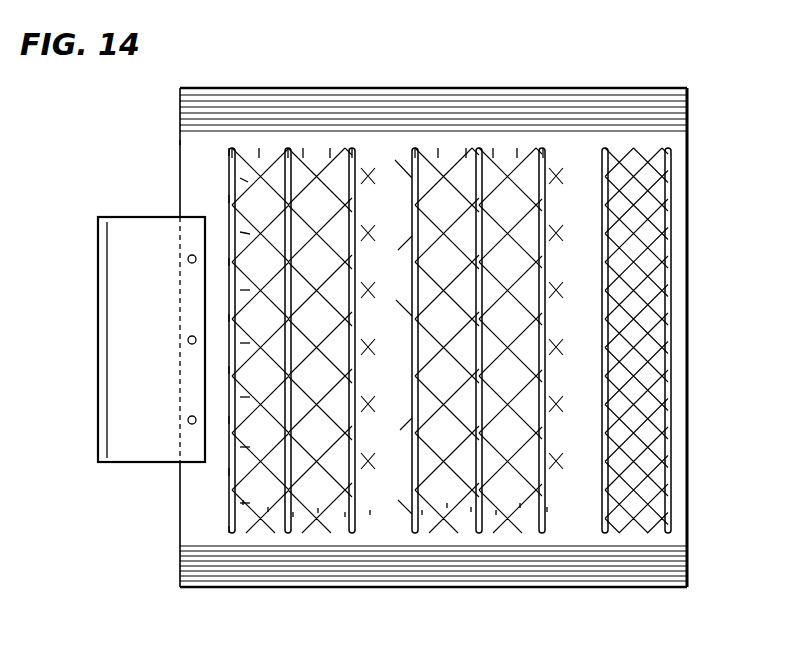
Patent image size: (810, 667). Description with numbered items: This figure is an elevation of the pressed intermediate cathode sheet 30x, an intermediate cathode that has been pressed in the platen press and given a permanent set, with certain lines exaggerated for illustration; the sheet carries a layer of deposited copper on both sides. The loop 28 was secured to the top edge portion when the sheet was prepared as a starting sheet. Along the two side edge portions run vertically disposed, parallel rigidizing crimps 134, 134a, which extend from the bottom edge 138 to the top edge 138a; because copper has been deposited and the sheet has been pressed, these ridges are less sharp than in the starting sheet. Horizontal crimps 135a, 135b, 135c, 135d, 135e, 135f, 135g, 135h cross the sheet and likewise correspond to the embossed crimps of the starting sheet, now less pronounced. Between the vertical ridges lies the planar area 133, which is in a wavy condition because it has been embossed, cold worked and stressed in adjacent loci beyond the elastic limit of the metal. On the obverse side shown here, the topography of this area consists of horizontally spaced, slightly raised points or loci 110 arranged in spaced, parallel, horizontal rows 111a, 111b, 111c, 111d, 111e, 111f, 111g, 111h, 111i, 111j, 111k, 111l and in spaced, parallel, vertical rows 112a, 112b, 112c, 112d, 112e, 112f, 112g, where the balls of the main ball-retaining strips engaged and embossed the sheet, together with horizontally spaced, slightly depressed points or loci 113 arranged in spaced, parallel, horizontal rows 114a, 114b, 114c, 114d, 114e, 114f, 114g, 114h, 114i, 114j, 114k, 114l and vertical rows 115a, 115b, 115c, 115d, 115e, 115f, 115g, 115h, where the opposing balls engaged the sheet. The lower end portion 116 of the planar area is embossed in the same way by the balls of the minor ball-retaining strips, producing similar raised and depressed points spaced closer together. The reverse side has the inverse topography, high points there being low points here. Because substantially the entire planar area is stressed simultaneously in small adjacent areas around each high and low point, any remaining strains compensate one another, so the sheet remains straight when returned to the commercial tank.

The loop 28 is at (110, 432).
The pressed intermediate cathode sheet 30x is at (692, 122).
The raised points or loci 110 is at (418, 350).
The horizontal row of raised points 111a is at (243, 500).
The horizontal row of raised points 111b is at (268, 507).
The horizontal row of raised points 111c is at (293, 512).
The horizontal row of raised points 111d is at (318, 508).
The horizontal row of raised points 111e is at (345, 512).
The horizontal row of raised points 111f is at (370, 510).
The horizontal row of raised points 111g is at (422, 510).
The horizontal row of raised points 111h is at (447, 503).
The horizontal row of raised points 111i is at (471, 507).
The horizontal row of raised points 111j is at (496, 510).
The horizontal row of raised points 111k is at (520, 503).
The horizontal row of raised points 111l is at (547, 507).
The vertical row of raised points 112a is at (250, 503).
The vertical row of raised points 112b is at (250, 447).
The vertical row of raised points 112c is at (250, 397).
The vertical row of raised points 112d is at (250, 343).
The vertical row of raised points 112e is at (250, 290).
The vertical row of raised points 112f is at (250, 234).
The vertical row of raised points 112g is at (248, 182).
The depressed points or loci 113 is at (330, 422).
The horizontal row of depressed points 114a is at (232, 142).
The horizontal row of depressed points 114b is at (259, 142).
The horizontal row of depressed points 114c is at (288, 142).
The horizontal row of depressed points 114d is at (303, 142).
The horizontal row of depressed points 114e is at (330, 142).
The horizontal row of depressed points 114f is at (352, 142).
The horizontal row of depressed points 114g is at (415, 142).
The horizontal row of depressed points 114h is at (438, 142).
The horizontal row of depressed points 114i is at (466, 142).
The horizontal row of depressed points 114j is at (493, 142).
The horizontal row of depressed points 114k is at (517, 142).
The horizontal row of depressed points 114l is at (543, 142).
The vertical row of depressed points 115a is at (226, 527).
The vertical row of depressed points 115b is at (226, 469).
The vertical row of depressed points 115c is at (226, 417).
The vertical row of depressed points 115d is at (226, 367).
The vertical row of depressed points 115e is at (226, 315).
The vertical row of depressed points 115f is at (226, 259).
The vertical row of depressed points 115g is at (226, 195).
The vertical row of depressed points 115h is at (226, 147).
The lower end portion of the planar area 116 is at (648, 508).
The planar area 133 is at (400, 317).
The rigidizing crimp 134 is at (685, 577).
The rigidizing crimp 134a is at (684, 110).
The horizontal crimp 135a is at (672, 155).
The horizontal crimp 135b is at (603, 168).
The horizontal crimp 135c is at (545, 300).
The horizontal crimp 135d is at (482, 262).
The horizontal crimp 135e is at (418, 240).
The horizontal crimp 135f is at (355, 214).
The horizontal crimp 135g is at (291, 283).
The horizontal crimp 135h is at (235, 318).
The bottom edge 138 is at (690, 545).
The top edge 138a is at (178, 546).